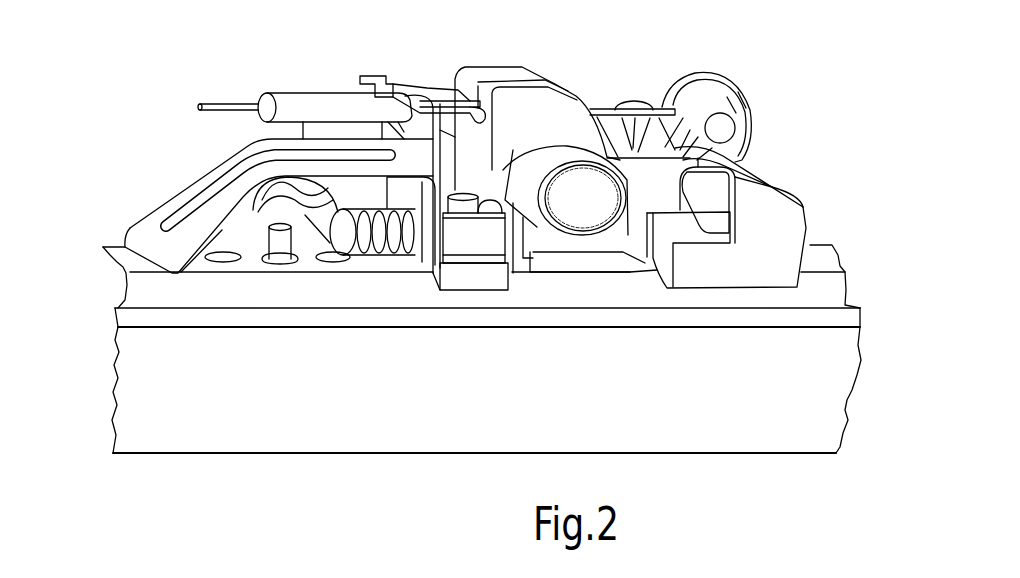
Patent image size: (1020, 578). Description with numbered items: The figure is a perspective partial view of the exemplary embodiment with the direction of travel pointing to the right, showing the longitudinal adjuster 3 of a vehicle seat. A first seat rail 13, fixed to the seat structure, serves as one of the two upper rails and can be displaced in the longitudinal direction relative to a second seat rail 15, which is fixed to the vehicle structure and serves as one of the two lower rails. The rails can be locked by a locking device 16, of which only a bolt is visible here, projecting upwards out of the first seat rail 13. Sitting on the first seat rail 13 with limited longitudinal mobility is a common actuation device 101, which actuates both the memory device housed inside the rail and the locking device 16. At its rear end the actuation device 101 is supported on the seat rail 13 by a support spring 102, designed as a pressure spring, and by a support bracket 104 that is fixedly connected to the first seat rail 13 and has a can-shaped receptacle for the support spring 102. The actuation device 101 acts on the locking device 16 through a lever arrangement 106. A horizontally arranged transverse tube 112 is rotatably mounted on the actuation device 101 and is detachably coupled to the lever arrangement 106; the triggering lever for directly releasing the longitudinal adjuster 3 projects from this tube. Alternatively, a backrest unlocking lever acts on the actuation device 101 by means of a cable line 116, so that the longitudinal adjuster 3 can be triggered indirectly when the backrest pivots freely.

The longitudinal adjuster 3 is at (188, 468).
The first seat rail 13 is at (817, 262).
The second seat rail 15 is at (763, 411).
The locking device 16 is at (268, 262).
The actuation device 101 is at (337, 68).
The support spring 102 is at (381, 255).
The support bracket 104 is at (146, 241).
The lever arrangement 106 is at (277, 196).
The transverse tube 112 is at (573, 178).
The cable line 116 is at (222, 105).